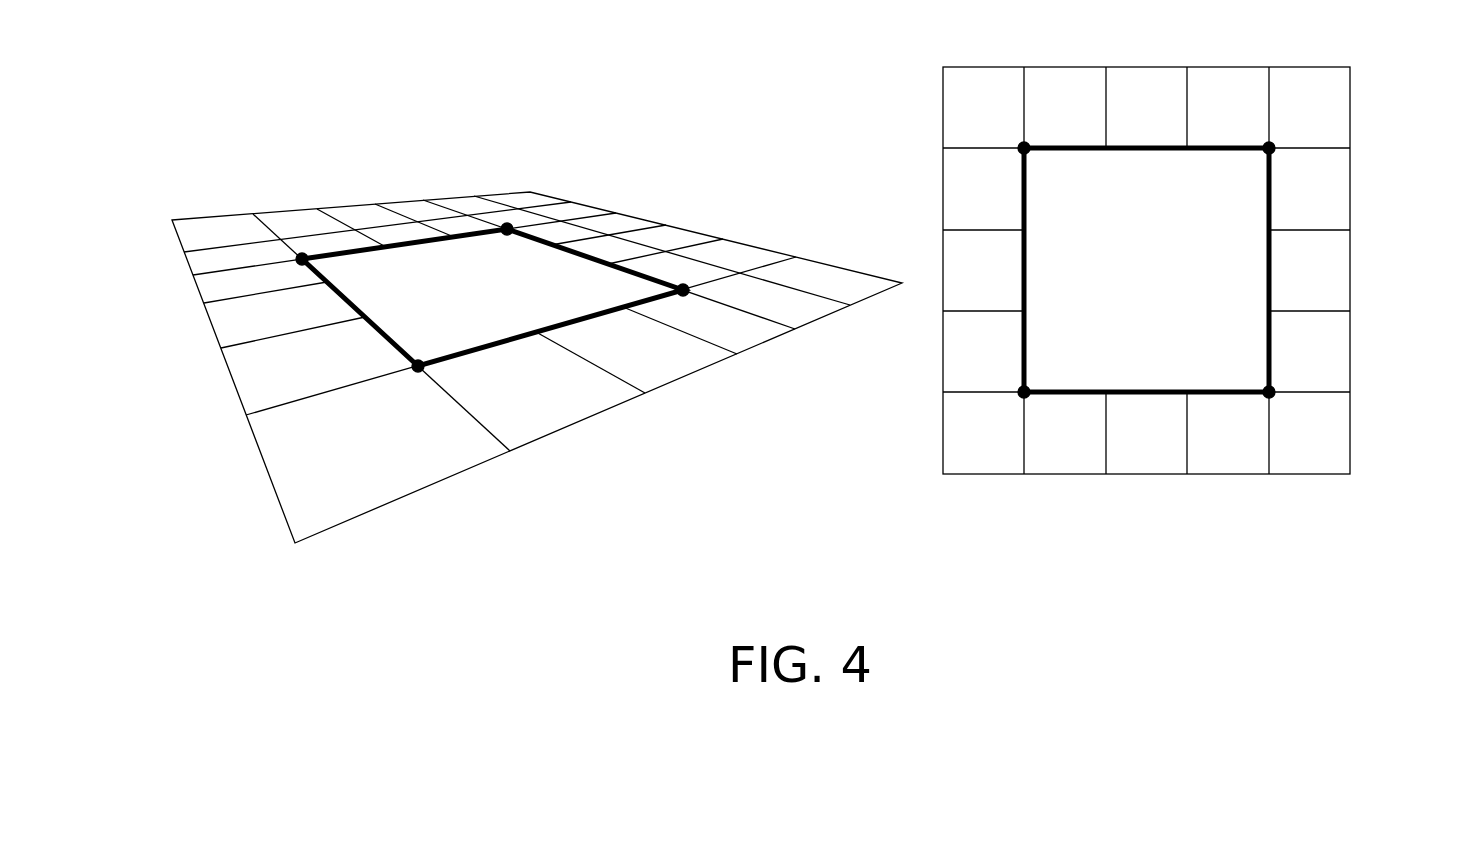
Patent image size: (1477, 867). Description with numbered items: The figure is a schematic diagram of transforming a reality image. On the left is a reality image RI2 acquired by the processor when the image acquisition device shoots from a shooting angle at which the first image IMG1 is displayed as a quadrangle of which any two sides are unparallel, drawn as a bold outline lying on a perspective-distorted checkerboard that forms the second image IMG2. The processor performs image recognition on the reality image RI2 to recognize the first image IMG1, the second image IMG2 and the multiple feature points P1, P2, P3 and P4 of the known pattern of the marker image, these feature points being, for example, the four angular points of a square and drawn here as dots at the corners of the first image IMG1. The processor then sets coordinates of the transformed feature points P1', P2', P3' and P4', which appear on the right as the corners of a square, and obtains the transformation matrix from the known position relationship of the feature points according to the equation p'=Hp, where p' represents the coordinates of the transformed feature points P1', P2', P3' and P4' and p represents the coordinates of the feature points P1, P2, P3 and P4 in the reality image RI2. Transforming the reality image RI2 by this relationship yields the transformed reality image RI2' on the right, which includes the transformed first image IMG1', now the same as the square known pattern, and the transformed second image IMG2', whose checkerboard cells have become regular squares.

The first image IMG1 is at (497, 354).
The second image IMG2 is at (500, 367).
The feature point P1 is at (438, 374).
The feature point P2 is at (692, 307).
The feature point P3 is at (515, 246).
The feature point P4 is at (324, 271).
The reality image RI2 is at (747, 511).
The transformed first image IMG1' is at (1247, 273).
The transformed second image IMG2' is at (1146, 301).
The transformed feature point P1' is at (1042, 376).
The transformed feature point P2' is at (1252, 376).
The transformed feature point P3' is at (1250, 164).
The transformed feature point P4' is at (1042, 164).
The transformed reality image RI2' is at (1402, 516).